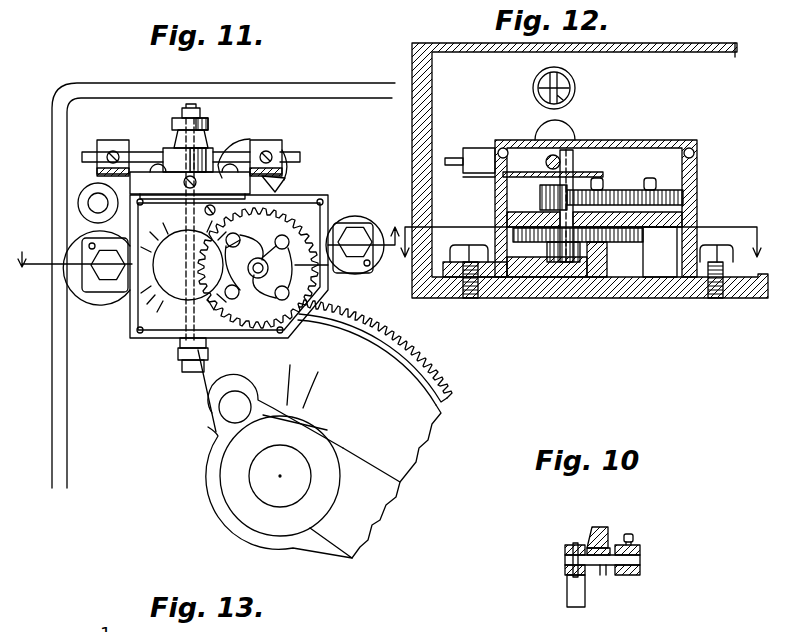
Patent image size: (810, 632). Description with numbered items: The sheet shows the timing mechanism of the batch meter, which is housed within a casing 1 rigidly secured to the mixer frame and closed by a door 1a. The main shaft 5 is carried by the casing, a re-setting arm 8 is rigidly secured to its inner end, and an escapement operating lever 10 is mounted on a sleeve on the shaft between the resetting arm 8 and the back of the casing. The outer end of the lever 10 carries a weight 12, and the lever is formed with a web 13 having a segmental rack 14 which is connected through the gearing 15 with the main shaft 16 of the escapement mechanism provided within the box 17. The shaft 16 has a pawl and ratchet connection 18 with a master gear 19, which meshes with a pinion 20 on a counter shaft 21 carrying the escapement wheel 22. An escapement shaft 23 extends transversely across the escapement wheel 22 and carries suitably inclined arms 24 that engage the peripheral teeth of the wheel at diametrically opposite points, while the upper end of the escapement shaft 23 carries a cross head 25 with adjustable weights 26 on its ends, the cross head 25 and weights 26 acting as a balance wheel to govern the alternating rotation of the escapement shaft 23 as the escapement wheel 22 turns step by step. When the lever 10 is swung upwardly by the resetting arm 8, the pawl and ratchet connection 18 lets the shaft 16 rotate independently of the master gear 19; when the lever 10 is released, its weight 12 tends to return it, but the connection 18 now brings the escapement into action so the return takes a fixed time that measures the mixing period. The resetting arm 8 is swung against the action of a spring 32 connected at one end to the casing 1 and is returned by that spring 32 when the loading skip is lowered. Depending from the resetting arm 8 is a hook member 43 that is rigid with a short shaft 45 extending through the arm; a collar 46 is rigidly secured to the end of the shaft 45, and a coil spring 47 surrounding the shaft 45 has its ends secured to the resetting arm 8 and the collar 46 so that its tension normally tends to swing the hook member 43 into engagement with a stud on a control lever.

In FIG. 11, the casing 1 is at (73, 85).
In FIG. 12, the casing 1 is at (412, 78).
In FIG. 12, the door 1a is at (720, 48).
In FIG. 11, the main shaft 5 is at (263, 474).
In FIG. 11, the re-setting arm 8 is at (378, 492).
In FIG. 10, the re-setting arm 8 is at (597, 527).
In FIG. 11, the escapement operating lever 10 is at (216, 498).
In FIG. 11, the weight 12 is at (209, 238).
In FIG. 11, the web 13 is at (372, 359).
In FIG. 12, the web 13 is at (582, 254).
In FIG. 11, the segmental rack 14 is at (436, 347).
In FIG. 12, the gearing 15 is at (590, 243).
In FIG. 11, the main shaft of escapement mechanism 16 is at (290, 316).
In FIG. 12, the main shaft of escapement mechanism 16 is at (630, 208).
In FIG. 11, the box 17 is at (132, 229).
In FIG. 12, the box 17 is at (699, 147).
In FIG. 11, the pawl and ratchet connection 18 is at (300, 227).
In FIG. 12, the pawl and ratchet connection 18 is at (638, 190).
In FIG. 11, the master gear 19 is at (282, 225).
In FIG. 12, the master gear 19 is at (667, 190).
In FIG. 11, the pinion 20 is at (176, 268).
In FIG. 12, the pinion 20 is at (540, 205).
In FIG. 11, the counter shaft 21 is at (190, 317).
In FIG. 11, the escapement wheel 22 is at (203, 332).
In FIG. 12, the escapement wheel 22 is at (582, 180).
In FIG. 11, the escapement shaft 23 is at (186, 346).
In FIG. 12, the escapement shaft 23 is at (553, 156).
In FIG. 11, the inclined arms 24 is at (220, 227).
In FIG. 12, the inclined arms 24 is at (572, 172).
In FIG. 11, the cross head 25 is at (95, 157).
In FIG. 12, the cross head 25 is at (445, 163).
In FIG. 11, the adjustable weights 26 is at (119, 140).
In FIG. 12, the adjustable weights 26 is at (467, 148).
In FIG. 12, the spring 32 is at (533, 90).
In FIG. 10, the hook member 43 is at (568, 596).
In FIG. 10, the short shaft 45 is at (645, 559).
In FIG. 10, the collar 46 is at (635, 548).
In FIG. 10, the coil spring 47 is at (612, 570).